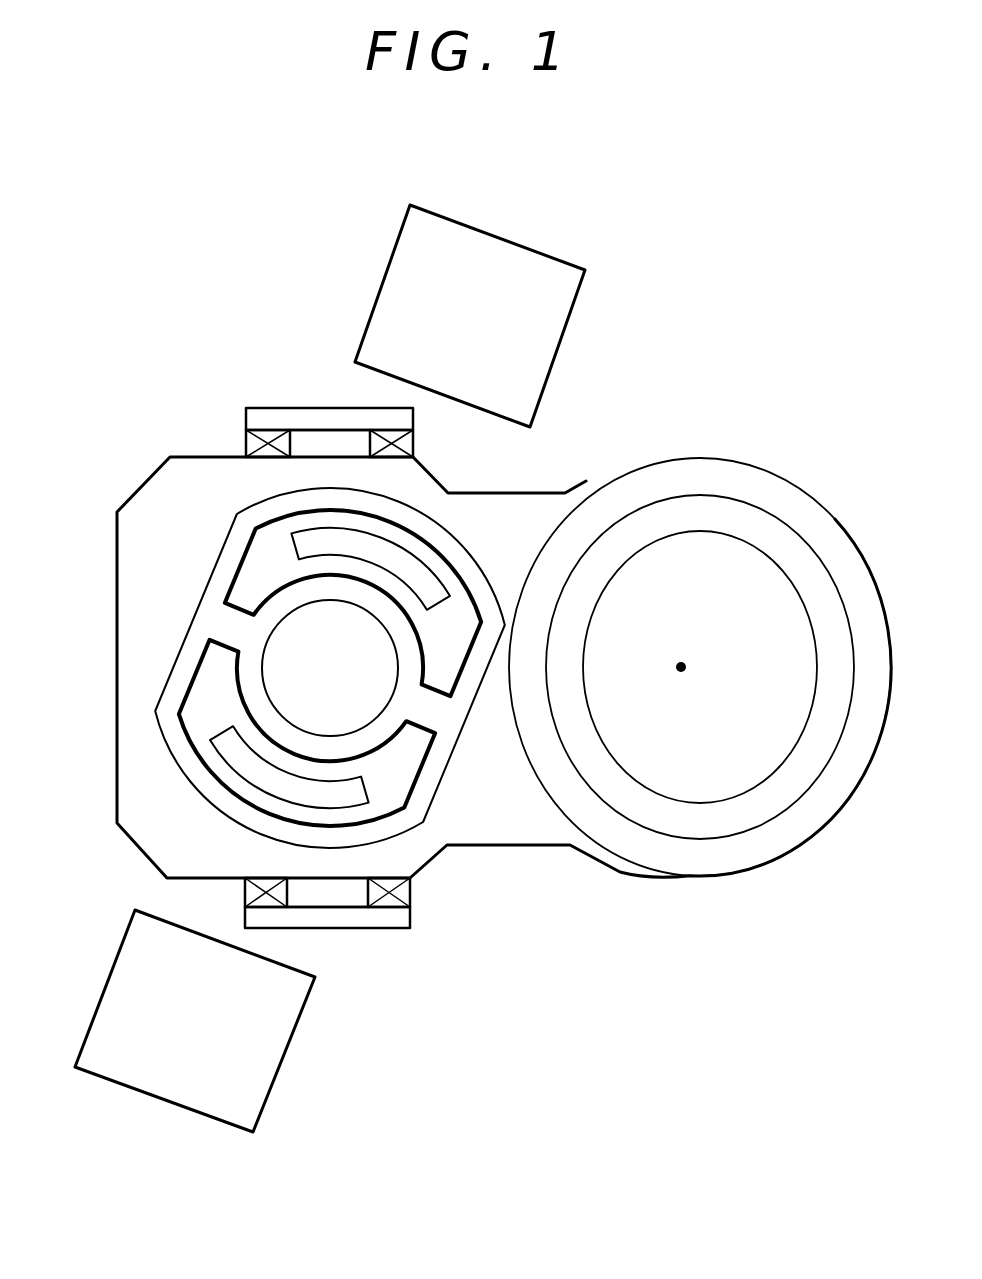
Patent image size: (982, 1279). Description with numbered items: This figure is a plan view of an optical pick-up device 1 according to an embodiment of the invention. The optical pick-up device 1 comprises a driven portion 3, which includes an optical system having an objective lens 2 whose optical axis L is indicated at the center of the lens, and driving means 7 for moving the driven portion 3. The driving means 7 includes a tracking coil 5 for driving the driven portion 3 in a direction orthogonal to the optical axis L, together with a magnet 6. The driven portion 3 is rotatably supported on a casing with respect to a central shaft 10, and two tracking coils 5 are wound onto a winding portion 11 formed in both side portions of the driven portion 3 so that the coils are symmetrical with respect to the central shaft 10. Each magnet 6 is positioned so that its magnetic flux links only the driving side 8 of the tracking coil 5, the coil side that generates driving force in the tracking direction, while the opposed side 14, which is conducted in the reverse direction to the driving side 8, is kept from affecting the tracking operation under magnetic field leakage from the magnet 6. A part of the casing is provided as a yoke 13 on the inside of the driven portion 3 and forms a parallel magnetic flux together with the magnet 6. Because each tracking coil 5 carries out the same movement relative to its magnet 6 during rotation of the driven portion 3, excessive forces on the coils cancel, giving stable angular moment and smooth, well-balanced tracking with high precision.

The optical pick-up device 1 is at (780, 382).
The objective lens 2 is at (757, 757).
The driven portion 3 is at (518, 823).
The tracking coil 5 is at (310, 657).
The magnet 6 is at (553, 263).
The driving means 7 is at (215, 401).
The driving side 8 is at (388, 431).
The central shaft 10 is at (300, 641).
The winding portion 11 is at (305, 451).
The yoke 13 is at (423, 573).
The opposed side 14 is at (270, 431).
The optical axis L is at (684, 664).